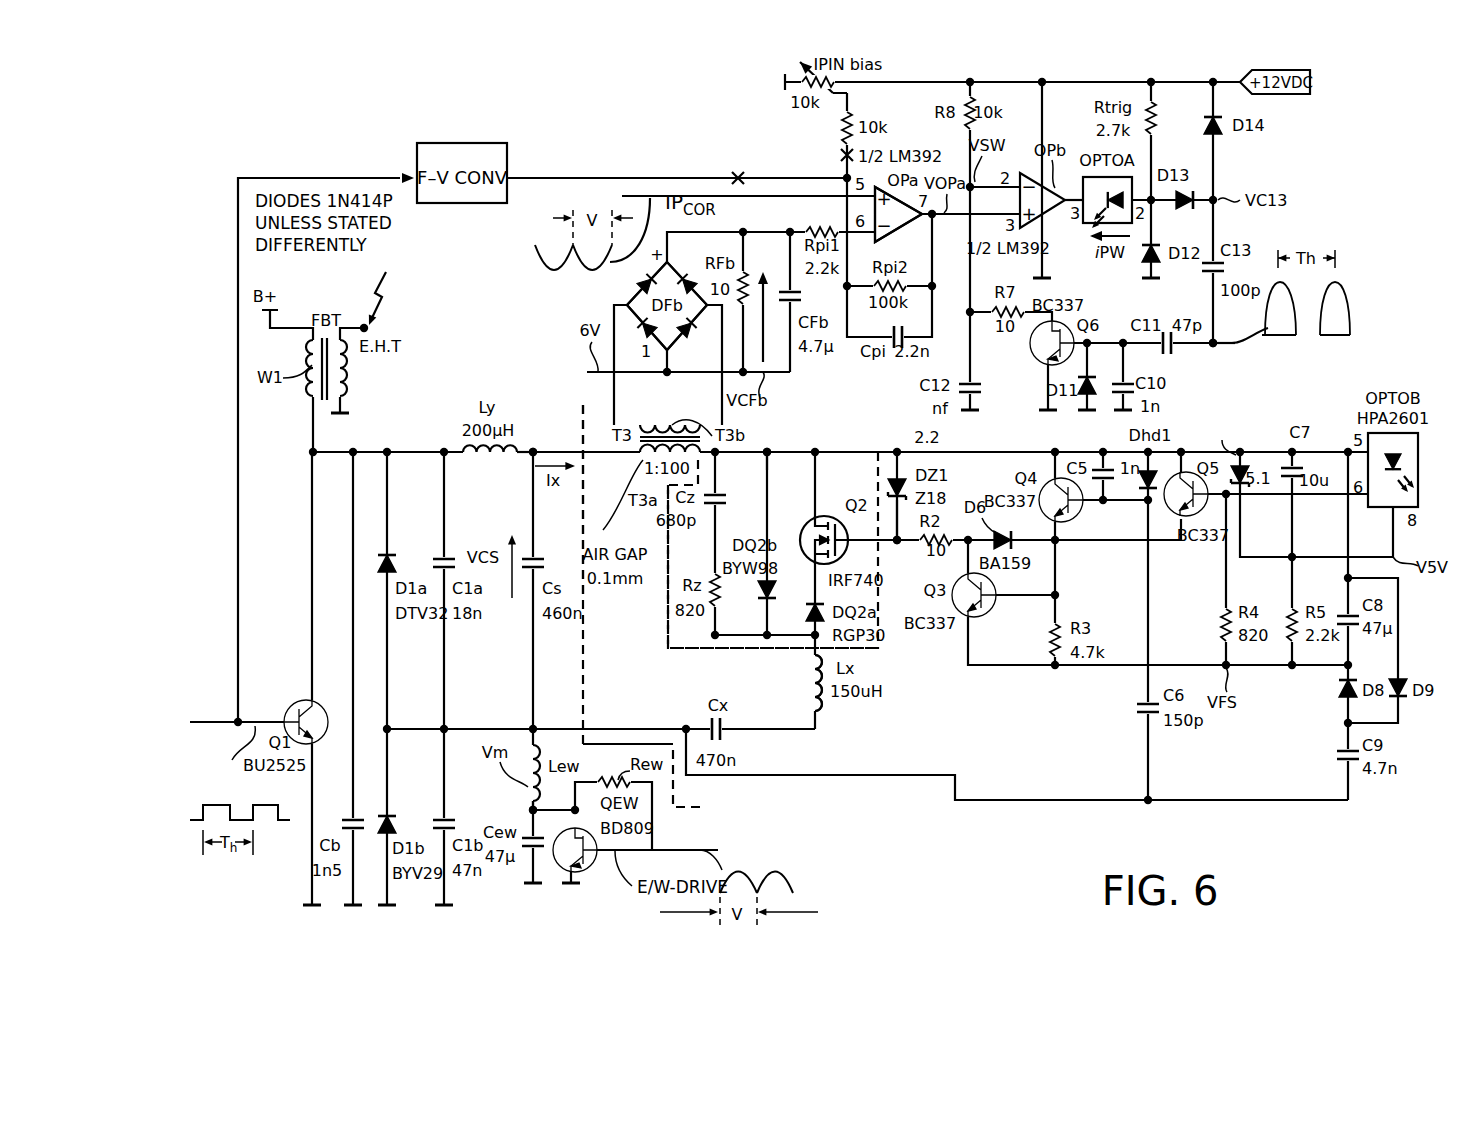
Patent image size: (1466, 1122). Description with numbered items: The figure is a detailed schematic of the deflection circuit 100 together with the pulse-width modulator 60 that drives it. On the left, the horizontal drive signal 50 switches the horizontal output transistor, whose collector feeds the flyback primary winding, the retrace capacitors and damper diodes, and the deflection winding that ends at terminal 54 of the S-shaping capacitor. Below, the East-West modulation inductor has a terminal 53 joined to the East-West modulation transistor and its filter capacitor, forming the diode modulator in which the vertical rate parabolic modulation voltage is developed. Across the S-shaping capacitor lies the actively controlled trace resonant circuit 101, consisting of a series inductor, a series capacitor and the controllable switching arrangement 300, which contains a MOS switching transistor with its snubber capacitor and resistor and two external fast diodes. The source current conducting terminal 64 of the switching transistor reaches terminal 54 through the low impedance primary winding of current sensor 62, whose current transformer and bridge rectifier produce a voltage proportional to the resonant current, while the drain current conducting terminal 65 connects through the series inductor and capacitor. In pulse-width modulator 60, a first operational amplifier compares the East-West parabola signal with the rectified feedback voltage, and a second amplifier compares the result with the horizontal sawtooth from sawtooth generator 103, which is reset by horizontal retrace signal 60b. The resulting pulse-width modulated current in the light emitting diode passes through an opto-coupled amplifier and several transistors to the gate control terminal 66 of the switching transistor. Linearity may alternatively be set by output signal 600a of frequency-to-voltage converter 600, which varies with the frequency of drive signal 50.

The horizontal drive signal 50 is at (276, 722).
The terminal of inductor Lew 53 is at (533, 812).
The terminal 54 is at (533, 455).
The pulse-width modulator 60 is at (808, 434).
The horizontal retrace signal 60b is at (1213, 345).
The current sensor 62 is at (680, 400).
The source current conducting terminal 64 is at (767, 452).
The drain current conducting terminal 65 is at (815, 652).
The control terminal 66 is at (897, 545).
The deflection circuit 100 is at (527, 436).
The actively controlled trace resonant circuit 101 is at (601, 695).
The sawtooth generator 103 is at (996, 410).
The controllable switching arrangement 300 is at (878, 649).
The frequency-to-voltage converter 600 is at (455, 205).
The output signal of frequency-to-voltage converter 600a is at (530, 176).